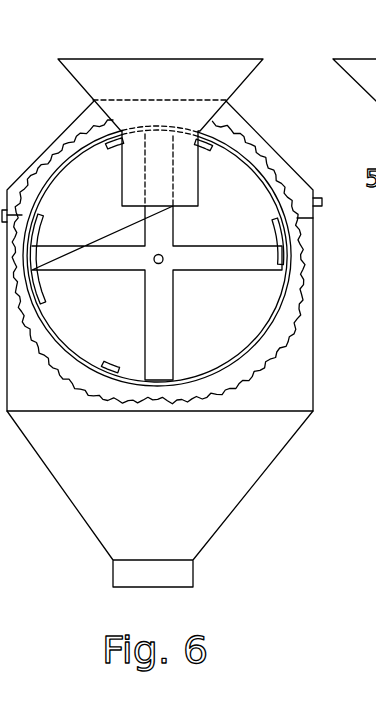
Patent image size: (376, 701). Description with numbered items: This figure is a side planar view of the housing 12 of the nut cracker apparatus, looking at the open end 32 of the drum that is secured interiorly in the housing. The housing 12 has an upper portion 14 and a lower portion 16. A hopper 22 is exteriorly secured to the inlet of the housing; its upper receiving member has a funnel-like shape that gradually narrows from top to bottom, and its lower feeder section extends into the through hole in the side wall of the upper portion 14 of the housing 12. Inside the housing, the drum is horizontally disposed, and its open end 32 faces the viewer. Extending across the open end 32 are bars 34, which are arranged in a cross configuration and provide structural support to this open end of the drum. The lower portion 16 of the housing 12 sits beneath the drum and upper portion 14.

The housing 12 is at (307, 337).
The upper portion 14 is at (57, 145).
The lower portion 16 is at (240, 485).
The hopper 22 is at (239, 65).
The open end 32 is at (228, 338).
The bars 34 is at (152, 295).